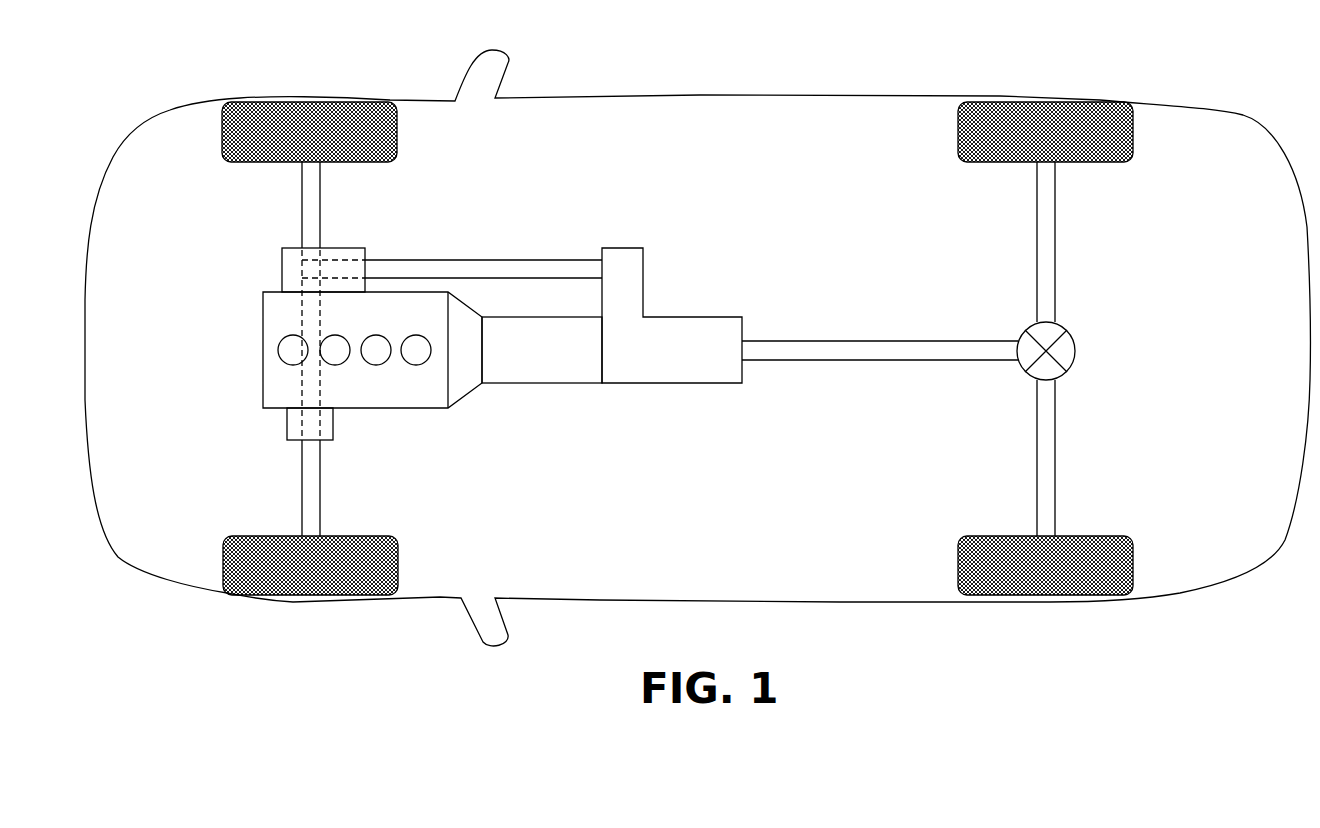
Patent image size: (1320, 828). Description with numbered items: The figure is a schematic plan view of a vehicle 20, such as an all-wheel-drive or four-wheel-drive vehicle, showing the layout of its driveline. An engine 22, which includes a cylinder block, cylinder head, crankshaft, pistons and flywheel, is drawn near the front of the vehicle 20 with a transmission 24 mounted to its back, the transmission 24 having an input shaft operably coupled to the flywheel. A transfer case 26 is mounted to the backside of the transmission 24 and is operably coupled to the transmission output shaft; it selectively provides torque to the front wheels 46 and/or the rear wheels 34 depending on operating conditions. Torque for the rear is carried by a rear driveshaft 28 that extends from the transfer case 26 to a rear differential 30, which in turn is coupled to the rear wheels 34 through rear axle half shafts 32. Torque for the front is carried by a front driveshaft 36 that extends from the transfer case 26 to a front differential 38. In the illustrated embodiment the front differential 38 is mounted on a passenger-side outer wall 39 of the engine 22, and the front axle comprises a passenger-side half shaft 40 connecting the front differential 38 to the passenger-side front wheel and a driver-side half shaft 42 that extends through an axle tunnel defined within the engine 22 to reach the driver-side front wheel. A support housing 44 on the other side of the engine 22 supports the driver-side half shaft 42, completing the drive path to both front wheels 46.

The vehicle 20 is at (712, 92).
The engine 22 is at (263, 345).
The transmission 24 is at (542, 350).
The transfer case 26 is at (672, 315).
The rear driveshaft 28 is at (880, 340).
The rear differential 30 is at (1020, 328).
The rear axle half shafts 32 is at (1058, 245).
The rear wheels 34 is at (957, 130).
The front driveshaft 36 is at (468, 260).
The front differential 38 is at (338, 248).
The passenger-side outer wall 39 is at (273, 288).
The passenger-side half shaft 40 is at (322, 203).
The driver-side half shaft 42 is at (322, 490).
The support housing 44 is at (285, 423).
The front wheels 46 is at (222, 128).